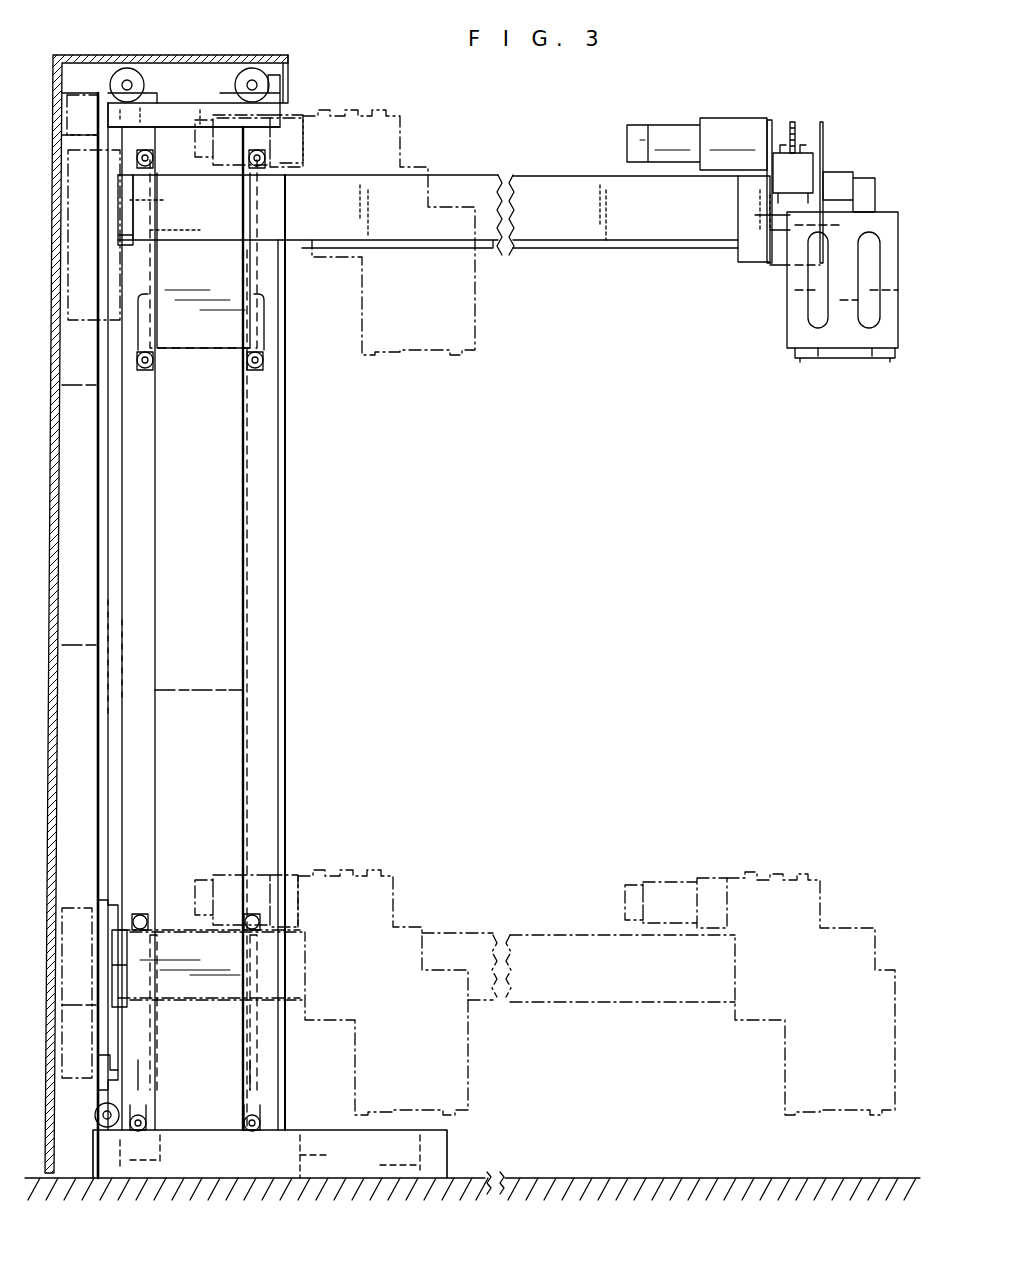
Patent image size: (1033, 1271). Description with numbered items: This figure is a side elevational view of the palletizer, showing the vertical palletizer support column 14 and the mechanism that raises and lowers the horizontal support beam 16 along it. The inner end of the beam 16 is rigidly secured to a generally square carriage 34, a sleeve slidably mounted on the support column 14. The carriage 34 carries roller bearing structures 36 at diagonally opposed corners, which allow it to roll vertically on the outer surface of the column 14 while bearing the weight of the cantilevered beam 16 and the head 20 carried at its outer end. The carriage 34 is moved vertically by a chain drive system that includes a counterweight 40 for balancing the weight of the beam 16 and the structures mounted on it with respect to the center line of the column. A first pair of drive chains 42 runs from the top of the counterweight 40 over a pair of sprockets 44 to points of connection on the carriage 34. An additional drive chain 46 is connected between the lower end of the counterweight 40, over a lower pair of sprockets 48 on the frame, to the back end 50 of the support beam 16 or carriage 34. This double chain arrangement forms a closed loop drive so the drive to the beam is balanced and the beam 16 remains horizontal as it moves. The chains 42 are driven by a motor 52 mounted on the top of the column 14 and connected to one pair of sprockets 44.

The palletizer support column 14 is at (234, 622).
The horizontal support beam 16 is at (577, 227).
The gripper head 20 is at (890, 207).
The carriage 34 is at (207, 330).
The roller bearing structures 36 is at (255, 176).
The counterweight 40 is at (84, 1014).
The first pair of drive chains 42 is at (107, 745).
The pair of sprockets 44 is at (256, 72).
The additional drive chain 46 is at (84, 1107).
The lower pair of sprockets 48 is at (106, 1127).
The back end of the support beam 50 is at (137, 218).
The motor 52 is at (277, 87).